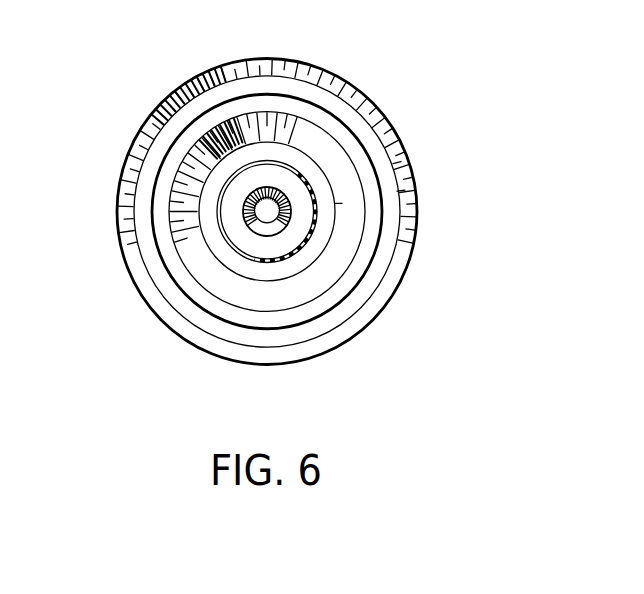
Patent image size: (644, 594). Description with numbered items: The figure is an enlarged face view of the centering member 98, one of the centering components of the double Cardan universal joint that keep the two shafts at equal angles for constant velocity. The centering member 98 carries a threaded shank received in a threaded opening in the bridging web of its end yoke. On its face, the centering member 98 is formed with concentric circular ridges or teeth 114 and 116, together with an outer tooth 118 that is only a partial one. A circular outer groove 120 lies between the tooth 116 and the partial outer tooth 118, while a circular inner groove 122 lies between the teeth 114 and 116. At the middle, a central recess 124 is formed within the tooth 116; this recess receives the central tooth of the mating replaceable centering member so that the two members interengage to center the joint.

The centering member 98 is at (148, 110).
The circular ridge or tooth 114 is at (348, 238).
The circular ridge or tooth 116 is at (305, 207).
The outer tooth 118 is at (325, 340).
The circular outer groove 120 is at (278, 337).
The circular inner groove 122 is at (270, 273).
The central recess 124 is at (268, 211).